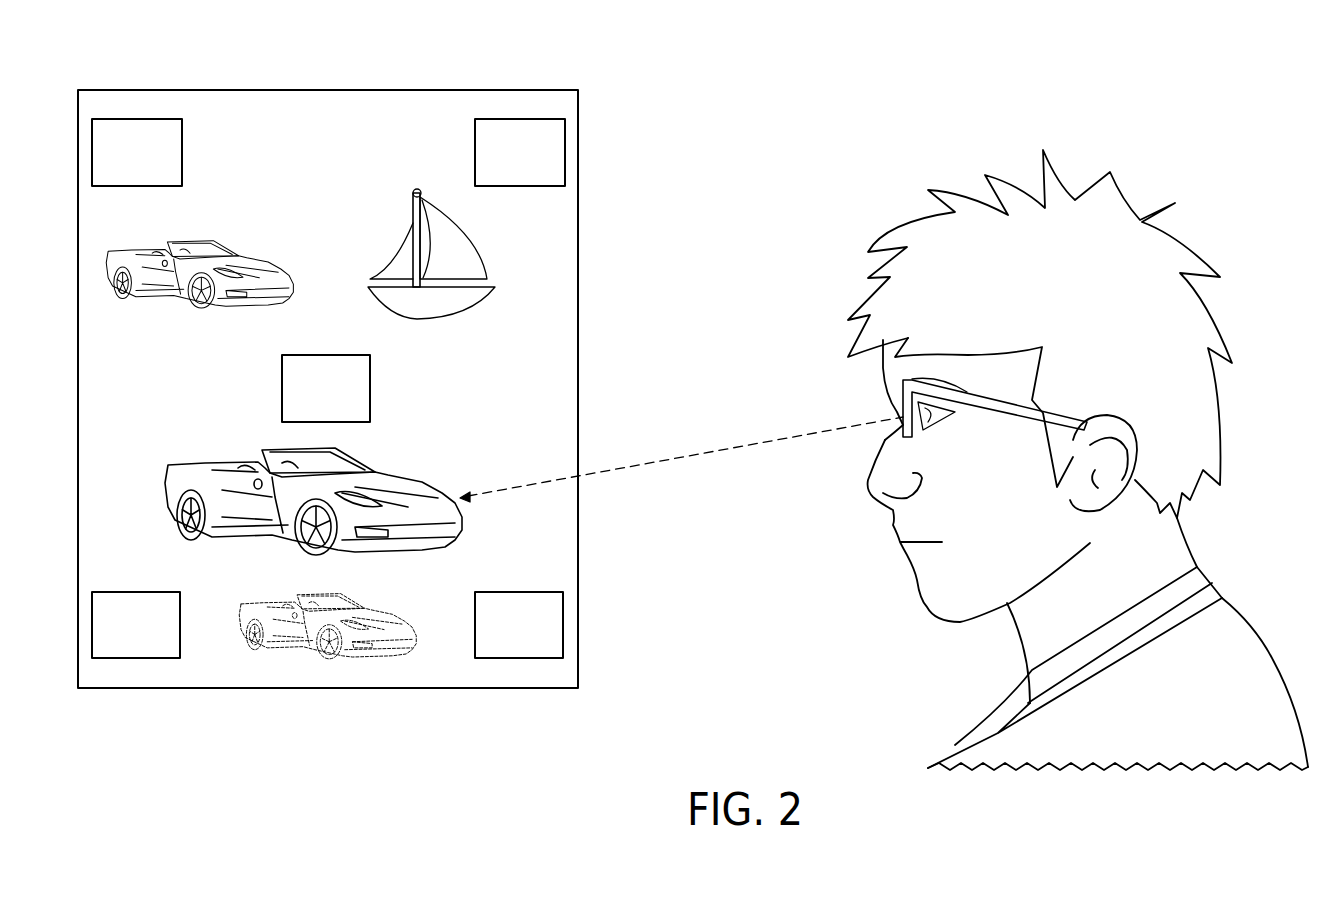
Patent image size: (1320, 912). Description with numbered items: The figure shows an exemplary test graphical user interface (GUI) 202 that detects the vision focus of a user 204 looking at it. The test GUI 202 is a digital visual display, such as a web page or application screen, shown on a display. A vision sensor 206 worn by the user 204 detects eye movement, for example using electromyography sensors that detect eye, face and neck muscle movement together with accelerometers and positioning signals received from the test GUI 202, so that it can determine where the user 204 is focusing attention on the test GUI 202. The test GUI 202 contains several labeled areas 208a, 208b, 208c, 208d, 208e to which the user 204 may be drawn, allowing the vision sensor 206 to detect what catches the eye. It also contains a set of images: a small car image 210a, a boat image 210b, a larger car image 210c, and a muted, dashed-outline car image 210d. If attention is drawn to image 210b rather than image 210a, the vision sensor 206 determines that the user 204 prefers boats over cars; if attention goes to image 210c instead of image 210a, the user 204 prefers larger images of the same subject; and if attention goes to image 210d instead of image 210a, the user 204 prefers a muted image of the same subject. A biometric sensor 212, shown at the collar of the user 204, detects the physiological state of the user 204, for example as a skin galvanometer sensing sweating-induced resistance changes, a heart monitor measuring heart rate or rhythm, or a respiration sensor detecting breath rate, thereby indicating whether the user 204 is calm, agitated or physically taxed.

The test graphical user interface (GUI) 202 is at (334, 90).
The user 204 is at (1223, 212).
The vision sensor 206 is at (1000, 417).
The area 208a is at (182, 157).
The area 208b is at (475, 157).
The area 208c is at (370, 392).
The area 208d is at (140, 592).
The area 208e is at (516, 592).
The image 210a is at (177, 302).
The image 210b is at (398, 251).
The image 210c is at (182, 460).
The image 210d is at (330, 658).
The biometric sensor 212 is at (1205, 572).